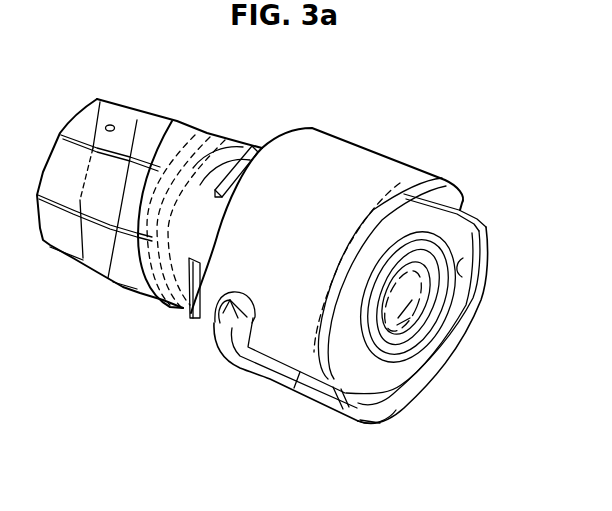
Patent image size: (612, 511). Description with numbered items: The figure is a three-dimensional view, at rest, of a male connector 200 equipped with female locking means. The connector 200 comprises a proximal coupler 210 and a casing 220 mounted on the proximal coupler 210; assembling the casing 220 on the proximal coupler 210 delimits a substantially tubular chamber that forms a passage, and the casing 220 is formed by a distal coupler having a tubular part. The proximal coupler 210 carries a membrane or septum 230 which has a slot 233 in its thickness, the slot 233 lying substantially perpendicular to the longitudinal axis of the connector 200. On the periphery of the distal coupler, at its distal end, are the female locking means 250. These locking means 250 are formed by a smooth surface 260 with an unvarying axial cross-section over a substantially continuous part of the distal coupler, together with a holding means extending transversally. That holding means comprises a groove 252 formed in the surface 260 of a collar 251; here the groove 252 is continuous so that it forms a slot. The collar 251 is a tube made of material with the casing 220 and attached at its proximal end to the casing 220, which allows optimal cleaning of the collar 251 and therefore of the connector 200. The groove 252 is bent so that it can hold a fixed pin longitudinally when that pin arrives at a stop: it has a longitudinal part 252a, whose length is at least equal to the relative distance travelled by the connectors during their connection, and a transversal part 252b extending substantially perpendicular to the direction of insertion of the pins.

The male connector 200 is at (443, 122).
The proximal coupler 210 is at (140, 128).
The casing 220 is at (393, 237).
The membrane or septum 230 is at (393, 313).
The slot 233 is at (417, 302).
The female locking means 250 is at (285, 328).
The collar 251 is at (290, 360).
The groove 252 is at (320, 380).
The longitudinal part 252a is at (347, 385).
The transversal part 252b is at (240, 320).
The smooth surface 260 is at (462, 277).